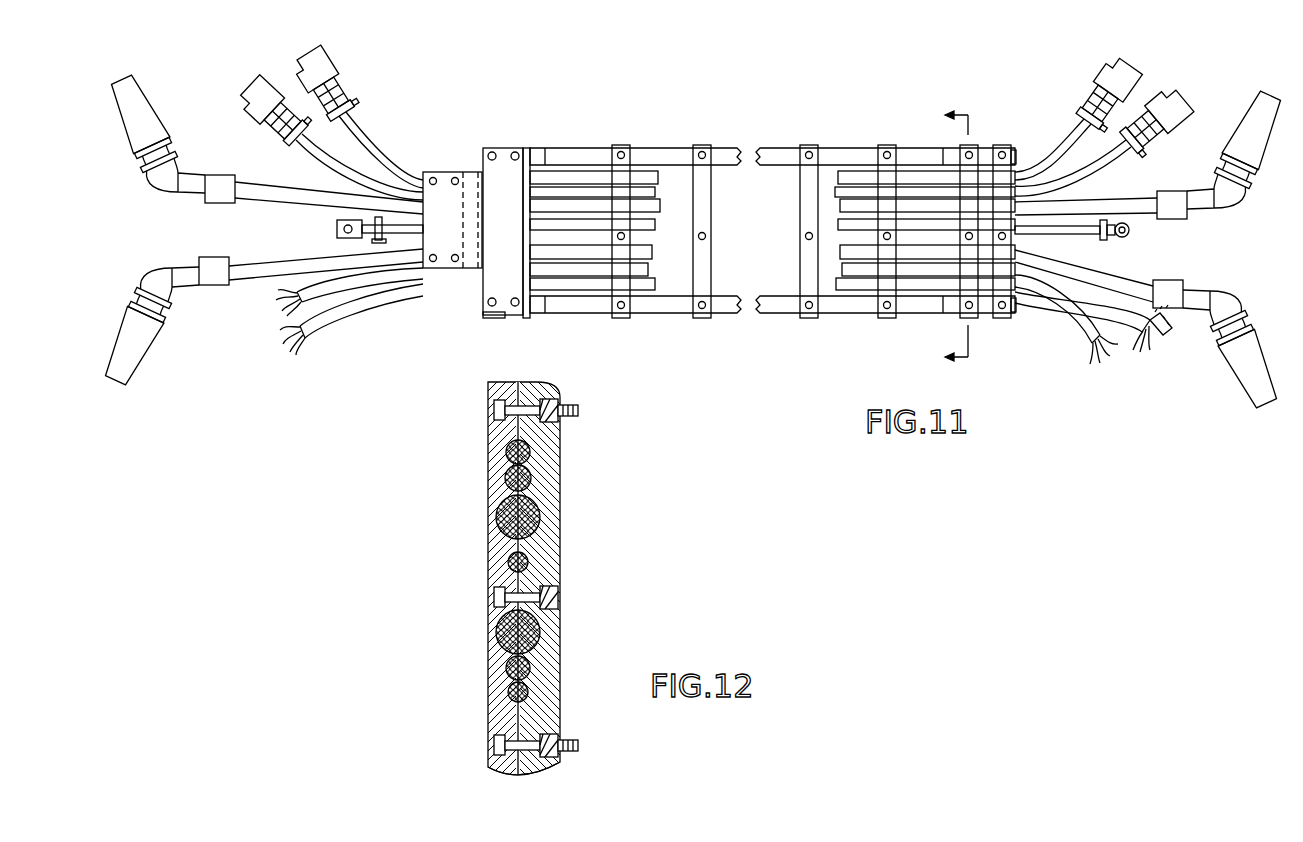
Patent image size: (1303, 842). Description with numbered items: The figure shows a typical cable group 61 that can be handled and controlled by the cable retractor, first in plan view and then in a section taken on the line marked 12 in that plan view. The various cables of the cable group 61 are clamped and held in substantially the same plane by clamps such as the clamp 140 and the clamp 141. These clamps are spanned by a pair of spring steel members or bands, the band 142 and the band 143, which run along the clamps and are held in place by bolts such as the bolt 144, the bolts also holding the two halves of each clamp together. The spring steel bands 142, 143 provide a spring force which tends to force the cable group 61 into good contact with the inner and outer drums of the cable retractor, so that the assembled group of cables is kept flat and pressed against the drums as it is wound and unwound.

In FIG. 11, the clamp 140 is at (950, 178).
In FIG. 12, the clamp 140 is at (555, 478).
In FIG. 11, the clamp 141 is at (889, 148).
In FIG. 11, the spring steel band 142 is at (776, 150).
In FIG. 12, the spring steel band 142 is at (540, 382).
In FIG. 11, the spring steel band 143 is at (776, 315).
In FIG. 12, the spring steel band 143 is at (548, 768).
In FIG. 12, the bolt 144 is at (488, 768).
In FIG. 11, the cable group 61 is at (668, 215).
In FIG. 11, the section line 12 is at (979, 236).